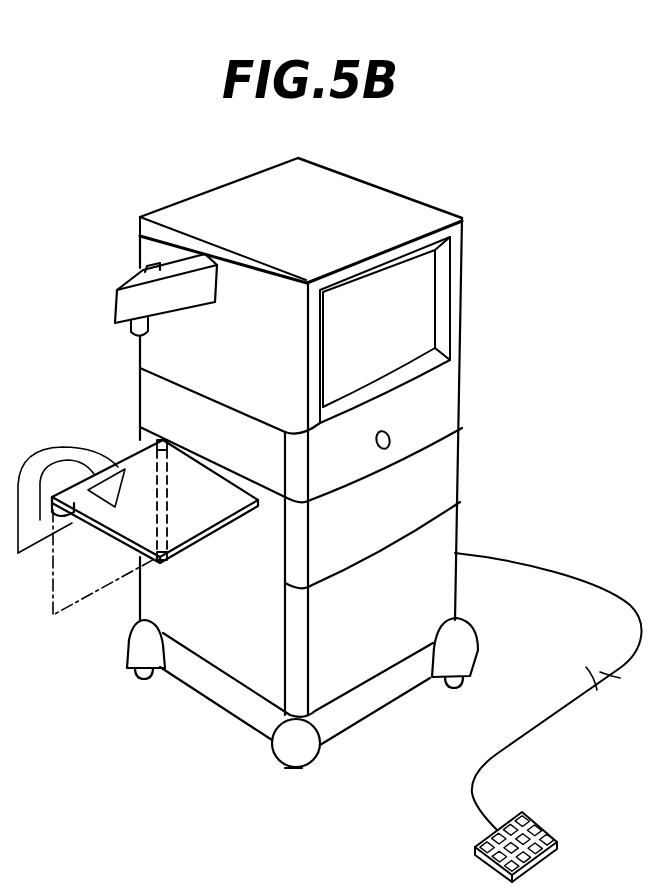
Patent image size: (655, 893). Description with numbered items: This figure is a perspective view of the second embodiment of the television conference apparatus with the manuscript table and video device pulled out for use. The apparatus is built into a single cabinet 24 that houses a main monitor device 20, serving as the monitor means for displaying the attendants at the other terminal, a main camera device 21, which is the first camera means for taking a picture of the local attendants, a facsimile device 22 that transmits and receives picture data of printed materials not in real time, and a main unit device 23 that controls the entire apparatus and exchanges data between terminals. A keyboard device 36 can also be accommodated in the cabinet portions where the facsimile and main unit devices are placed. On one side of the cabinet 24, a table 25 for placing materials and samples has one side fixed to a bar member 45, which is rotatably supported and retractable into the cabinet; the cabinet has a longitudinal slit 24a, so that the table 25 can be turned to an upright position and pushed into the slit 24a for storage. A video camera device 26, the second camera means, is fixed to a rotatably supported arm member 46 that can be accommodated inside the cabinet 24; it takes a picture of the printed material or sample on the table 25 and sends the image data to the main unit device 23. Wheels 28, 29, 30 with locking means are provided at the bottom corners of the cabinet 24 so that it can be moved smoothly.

The main monitor device 20 is at (423, 327).
The main camera device 21 is at (393, 432).
The group 3 facsimile device 22 is at (438, 488).
The main unit device 23 is at (435, 547).
The cabinet 24 is at (412, 197).
The longitudinal slit 24a is at (160, 560).
The table 25 is at (118, 520).
The video camera device 26 is at (133, 340).
The wheel 28 is at (143, 680).
The wheel 29 is at (302, 770).
The wheel 30 is at (453, 688).
The keyboard device 36 is at (535, 818).
The bar member 45 is at (153, 440).
The arm member 46 is at (133, 290).